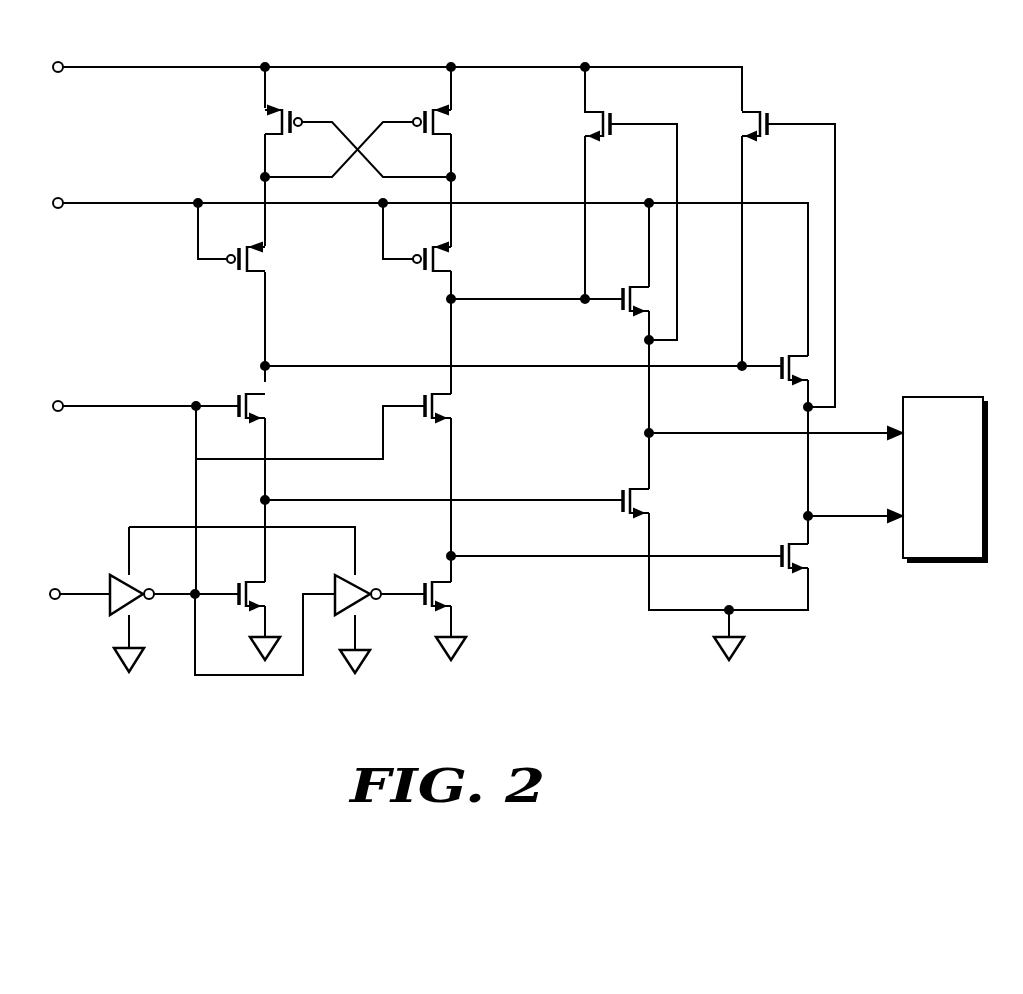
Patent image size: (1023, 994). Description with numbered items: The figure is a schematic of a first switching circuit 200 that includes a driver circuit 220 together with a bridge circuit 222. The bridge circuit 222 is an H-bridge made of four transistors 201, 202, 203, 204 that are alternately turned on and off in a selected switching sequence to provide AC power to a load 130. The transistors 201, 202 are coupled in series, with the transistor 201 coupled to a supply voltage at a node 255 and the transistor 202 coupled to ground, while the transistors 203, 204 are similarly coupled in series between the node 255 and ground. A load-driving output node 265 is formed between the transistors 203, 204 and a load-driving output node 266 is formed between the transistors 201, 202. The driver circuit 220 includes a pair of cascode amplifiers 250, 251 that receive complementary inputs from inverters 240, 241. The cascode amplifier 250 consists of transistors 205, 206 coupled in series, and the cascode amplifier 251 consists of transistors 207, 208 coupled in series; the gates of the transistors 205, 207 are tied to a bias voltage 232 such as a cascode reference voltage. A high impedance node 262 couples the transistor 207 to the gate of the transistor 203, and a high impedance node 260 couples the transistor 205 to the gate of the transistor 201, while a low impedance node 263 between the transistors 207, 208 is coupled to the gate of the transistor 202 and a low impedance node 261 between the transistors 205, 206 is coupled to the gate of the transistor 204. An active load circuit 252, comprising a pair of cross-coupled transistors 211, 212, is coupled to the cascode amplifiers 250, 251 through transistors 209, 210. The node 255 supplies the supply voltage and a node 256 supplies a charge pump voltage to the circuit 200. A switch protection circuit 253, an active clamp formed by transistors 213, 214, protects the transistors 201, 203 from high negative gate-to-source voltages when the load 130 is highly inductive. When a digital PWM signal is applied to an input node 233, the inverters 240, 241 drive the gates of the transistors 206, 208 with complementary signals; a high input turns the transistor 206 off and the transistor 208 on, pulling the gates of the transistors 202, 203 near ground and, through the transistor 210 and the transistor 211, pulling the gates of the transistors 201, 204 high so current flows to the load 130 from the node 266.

The first switching circuit 200 is at (667, 747).
The load 130 is at (970, 528).
The transistor 201 is at (780, 383).
The transistor 202 is at (798, 557).
The transistor 203 is at (623, 312).
The transistor 204 is at (637, 501).
The transistor 205 is at (250, 407).
The transistor 206 is at (252, 594).
The transistor 207 is at (440, 407).
The transistor 208 is at (440, 596).
The transistor 209 is at (252, 259).
The transistor 210 is at (440, 259).
The cross-coupled transistor 211 is at (275, 124).
The cross-coupled transistor 212 is at (440, 124).
The transistor 213 is at (600, 124).
The transistor 214 is at (756, 124).
The driver circuit 220 is at (166, 470).
The bridge circuit 222 is at (884, 268).
The bias voltage 232 is at (58, 412).
The input node 233 is at (55, 600).
The inverter 240 is at (138, 585).
The inverter 241 is at (366, 585).
The cascode amplifier 250 is at (170, 336).
The cascode amplifier 251 is at (527, 629).
The active load circuit 252 is at (250, 46).
The switch protection circuit 253 is at (760, 46).
The node 255 is at (58, 209).
The node 256 is at (58, 73).
The high impedance node 260 is at (262, 366).
The low impedance node 261 is at (268, 497).
The high impedance node 262 is at (448, 300).
The low impedance node 263 is at (454, 553).
The load-driving output node 265 is at (646, 433).
The load-driving output node 266 is at (806, 517).